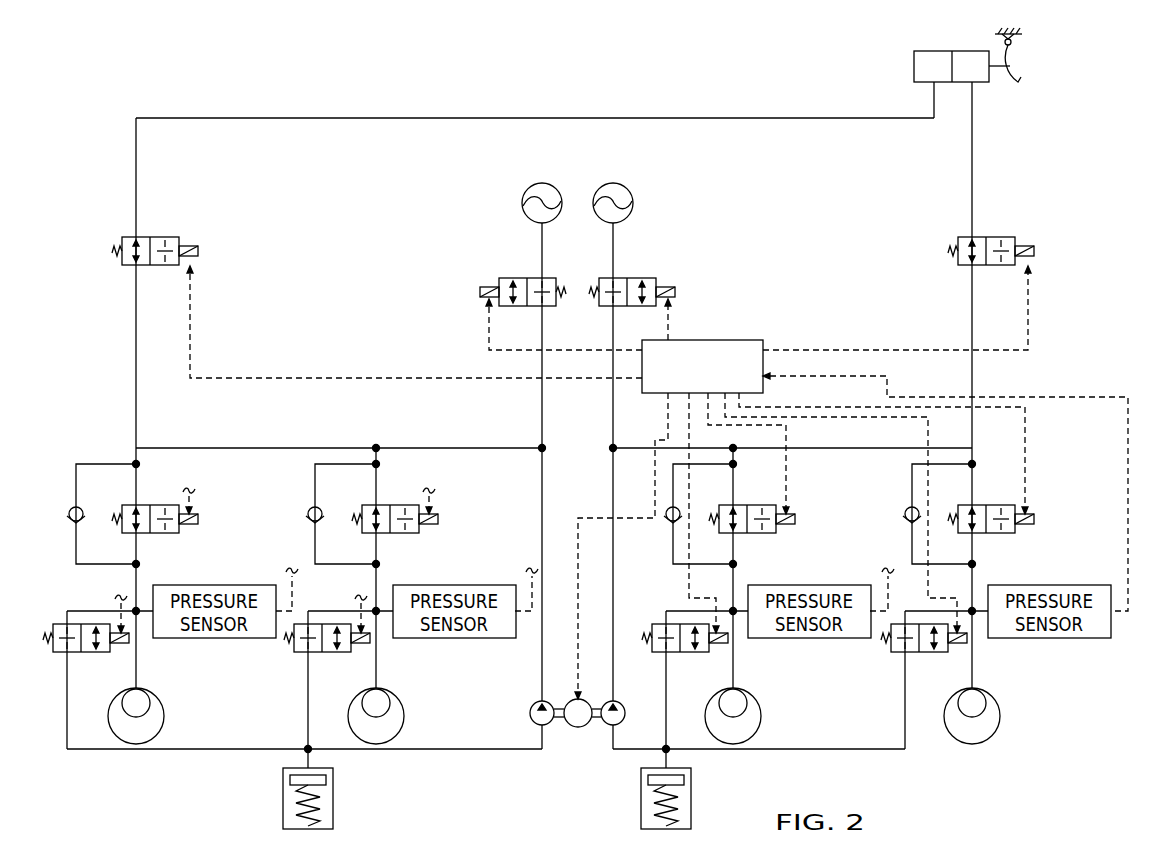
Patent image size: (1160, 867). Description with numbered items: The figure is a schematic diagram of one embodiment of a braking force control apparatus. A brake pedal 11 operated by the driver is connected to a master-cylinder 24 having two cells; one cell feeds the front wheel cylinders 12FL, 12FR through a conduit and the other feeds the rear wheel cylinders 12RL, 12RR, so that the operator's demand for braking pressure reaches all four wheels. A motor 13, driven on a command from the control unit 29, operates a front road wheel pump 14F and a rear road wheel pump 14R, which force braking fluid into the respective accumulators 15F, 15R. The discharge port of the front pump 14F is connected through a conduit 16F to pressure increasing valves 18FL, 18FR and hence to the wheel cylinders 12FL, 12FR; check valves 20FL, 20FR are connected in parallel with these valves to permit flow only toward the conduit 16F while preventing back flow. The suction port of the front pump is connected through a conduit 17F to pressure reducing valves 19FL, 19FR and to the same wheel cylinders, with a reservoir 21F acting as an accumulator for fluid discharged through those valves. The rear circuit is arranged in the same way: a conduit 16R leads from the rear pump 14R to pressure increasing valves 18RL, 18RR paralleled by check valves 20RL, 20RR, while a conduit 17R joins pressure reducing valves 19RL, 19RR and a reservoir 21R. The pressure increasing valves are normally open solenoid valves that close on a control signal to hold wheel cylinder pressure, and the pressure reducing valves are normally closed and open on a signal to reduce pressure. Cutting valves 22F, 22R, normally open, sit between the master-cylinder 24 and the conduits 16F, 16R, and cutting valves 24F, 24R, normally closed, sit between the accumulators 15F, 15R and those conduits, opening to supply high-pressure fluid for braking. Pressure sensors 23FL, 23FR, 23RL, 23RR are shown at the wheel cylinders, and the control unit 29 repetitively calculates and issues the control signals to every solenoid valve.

The master-cylinder 24 is at (930, 51).
The brake pedal 11 is at (1020, 62).
The cutting valve 22R is at (170, 237).
The cutting valve 22F is at (1003, 237).
The accumulator 15R is at (523, 201).
The accumulator 15F is at (594, 201).
The cutting valve 24R is at (503, 278).
The cutting valve 24F is at (651, 278).
The control unit 29 is at (745, 340).
The conduit 16R is at (480, 448).
The conduit 16F is at (638, 448).
The check valve 20RL is at (70, 522).
The check valve 20RR is at (309, 522).
The check valve 20FL is at (668, 522).
The check valve 20FR is at (907, 522).
The pressure increasing valve 18RL is at (162, 533).
The pressure increasing valve 18RR is at (402, 533).
The pressure increasing valve 18FL is at (759, 533).
The pressure increasing valve 18FR is at (998, 533).
The pressure reducing valve 19RL is at (58, 652).
The pressure reducing valve 19RR is at (327, 638).
The pressure reducing valve 19FL is at (658, 652).
The pressure reducing valve 19FR is at (897, 652).
The rear-left pressure sensor 23RL is at (216, 638).
The rear-right pressure sensor 23RR is at (455, 638).
The front-left pressure sensor 23FL is at (812, 638).
The front-right pressure sensor 23FR is at (1072, 638).
The wheel cylinder 12RL is at (165, 716).
The wheel cylinder 12RR is at (405, 716).
The wheel cylinder 12FL is at (762, 716).
The wheel cylinder 12FR is at (1001, 716).
The conduit 17R is at (490, 749).
The conduit 17F is at (845, 749).
The rear road wheel pump 14R is at (546, 726).
The front road wheel pump 14F is at (609, 726).
The motor 13 is at (577, 728).
The reservoir 21R is at (333, 796).
The reservoir 21F is at (691, 796).